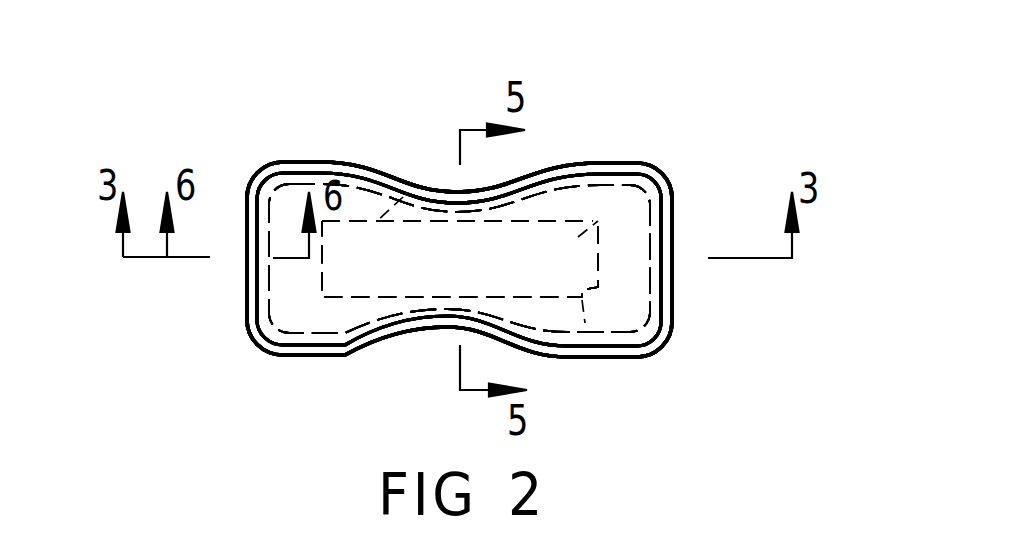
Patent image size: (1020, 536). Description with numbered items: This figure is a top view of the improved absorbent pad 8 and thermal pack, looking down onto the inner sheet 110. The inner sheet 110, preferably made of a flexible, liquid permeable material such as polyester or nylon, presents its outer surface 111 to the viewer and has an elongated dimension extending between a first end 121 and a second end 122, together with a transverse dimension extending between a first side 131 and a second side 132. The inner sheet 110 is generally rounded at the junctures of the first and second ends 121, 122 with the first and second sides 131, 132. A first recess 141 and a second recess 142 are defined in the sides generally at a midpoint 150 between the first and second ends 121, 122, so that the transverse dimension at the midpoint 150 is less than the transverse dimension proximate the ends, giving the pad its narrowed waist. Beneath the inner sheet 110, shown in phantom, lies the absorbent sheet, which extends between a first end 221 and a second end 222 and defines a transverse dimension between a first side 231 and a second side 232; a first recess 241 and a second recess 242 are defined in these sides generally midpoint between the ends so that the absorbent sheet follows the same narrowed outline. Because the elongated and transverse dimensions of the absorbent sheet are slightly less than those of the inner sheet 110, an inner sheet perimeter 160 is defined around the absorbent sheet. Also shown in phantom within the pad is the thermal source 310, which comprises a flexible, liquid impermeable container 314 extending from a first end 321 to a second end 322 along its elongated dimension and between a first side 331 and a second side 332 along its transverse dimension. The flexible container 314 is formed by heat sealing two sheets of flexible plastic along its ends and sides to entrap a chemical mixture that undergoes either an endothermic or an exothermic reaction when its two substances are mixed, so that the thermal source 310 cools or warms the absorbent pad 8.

The absorbent pad 8 is at (657, 125).
The inner sheet 110 is at (575, 185).
The outer surface 111 is at (653, 297).
The first end 121 is at (257, 280).
The second end 122 is at (655, 226).
The first side 131 is at (320, 357).
The second side 132 is at (290, 192).
The first recess 141 is at (507, 337).
The second recess 142 is at (450, 188).
The midpoint 150 is at (447, 157).
The inner sheet perimeter 160 is at (670, 193).
The first end 221 is at (262, 312).
The second end 222 is at (655, 277).
The first side 231 is at (355, 340).
The second side 232 is at (308, 186).
The first recess 241 is at (406, 340).
The second recess 242 is at (470, 180).
The thermal source 310 is at (598, 221).
The flexible container 314 is at (446, 297).
The first end 321 is at (322, 297).
The second end 322 is at (677, 327).
The first side 331 is at (598, 288).
The second side 332 is at (403, 183).